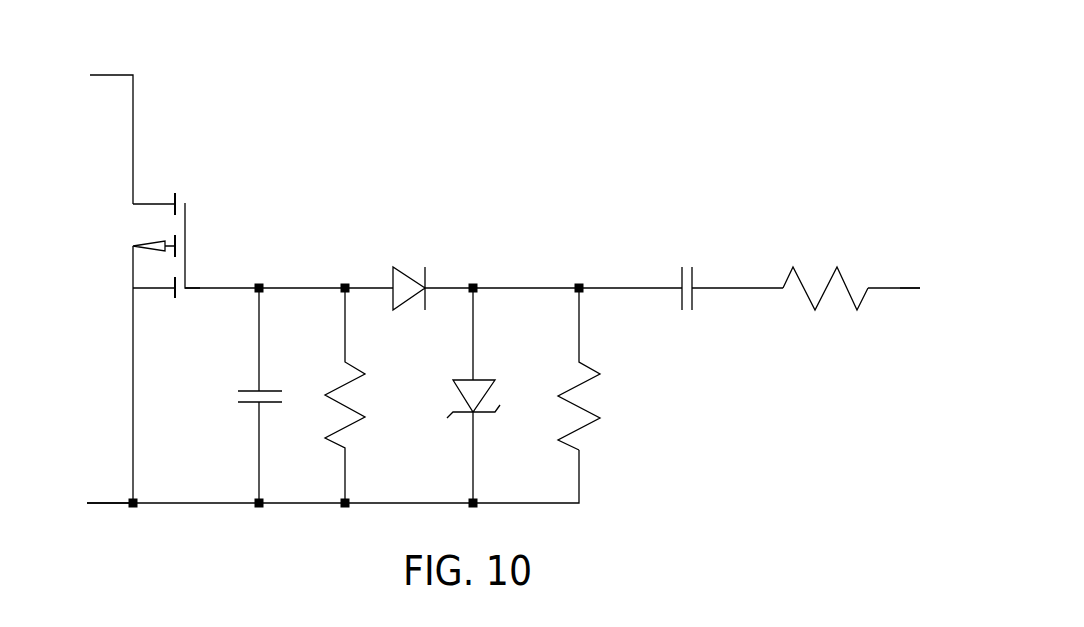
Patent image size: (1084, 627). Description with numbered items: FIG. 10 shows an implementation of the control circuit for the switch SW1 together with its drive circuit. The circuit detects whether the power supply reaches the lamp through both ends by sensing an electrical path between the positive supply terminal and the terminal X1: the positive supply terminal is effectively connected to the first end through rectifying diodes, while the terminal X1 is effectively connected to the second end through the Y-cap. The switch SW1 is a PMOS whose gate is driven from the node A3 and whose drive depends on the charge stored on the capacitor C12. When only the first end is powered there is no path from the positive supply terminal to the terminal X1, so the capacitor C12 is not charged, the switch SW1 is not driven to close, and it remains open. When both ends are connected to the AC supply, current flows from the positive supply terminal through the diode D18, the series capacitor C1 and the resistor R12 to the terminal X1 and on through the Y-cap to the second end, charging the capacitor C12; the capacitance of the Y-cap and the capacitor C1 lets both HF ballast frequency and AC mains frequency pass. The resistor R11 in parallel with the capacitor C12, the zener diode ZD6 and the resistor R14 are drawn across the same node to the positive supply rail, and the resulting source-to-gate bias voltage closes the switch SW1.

The input terminal A3 is at (90, 130).
The switch SW1 is at (125, 245).
The capacitor C12 is at (284, 395).
The resistor R11 is at (378, 395).
The diode D18 is at (408, 270).
The zener diode ZD6 is at (496, 395).
The resistor R14 is at (612, 369).
The capacitor C1 is at (686, 270).
The resistor R12 is at (825, 270).
The terminal X1 is at (929, 290).